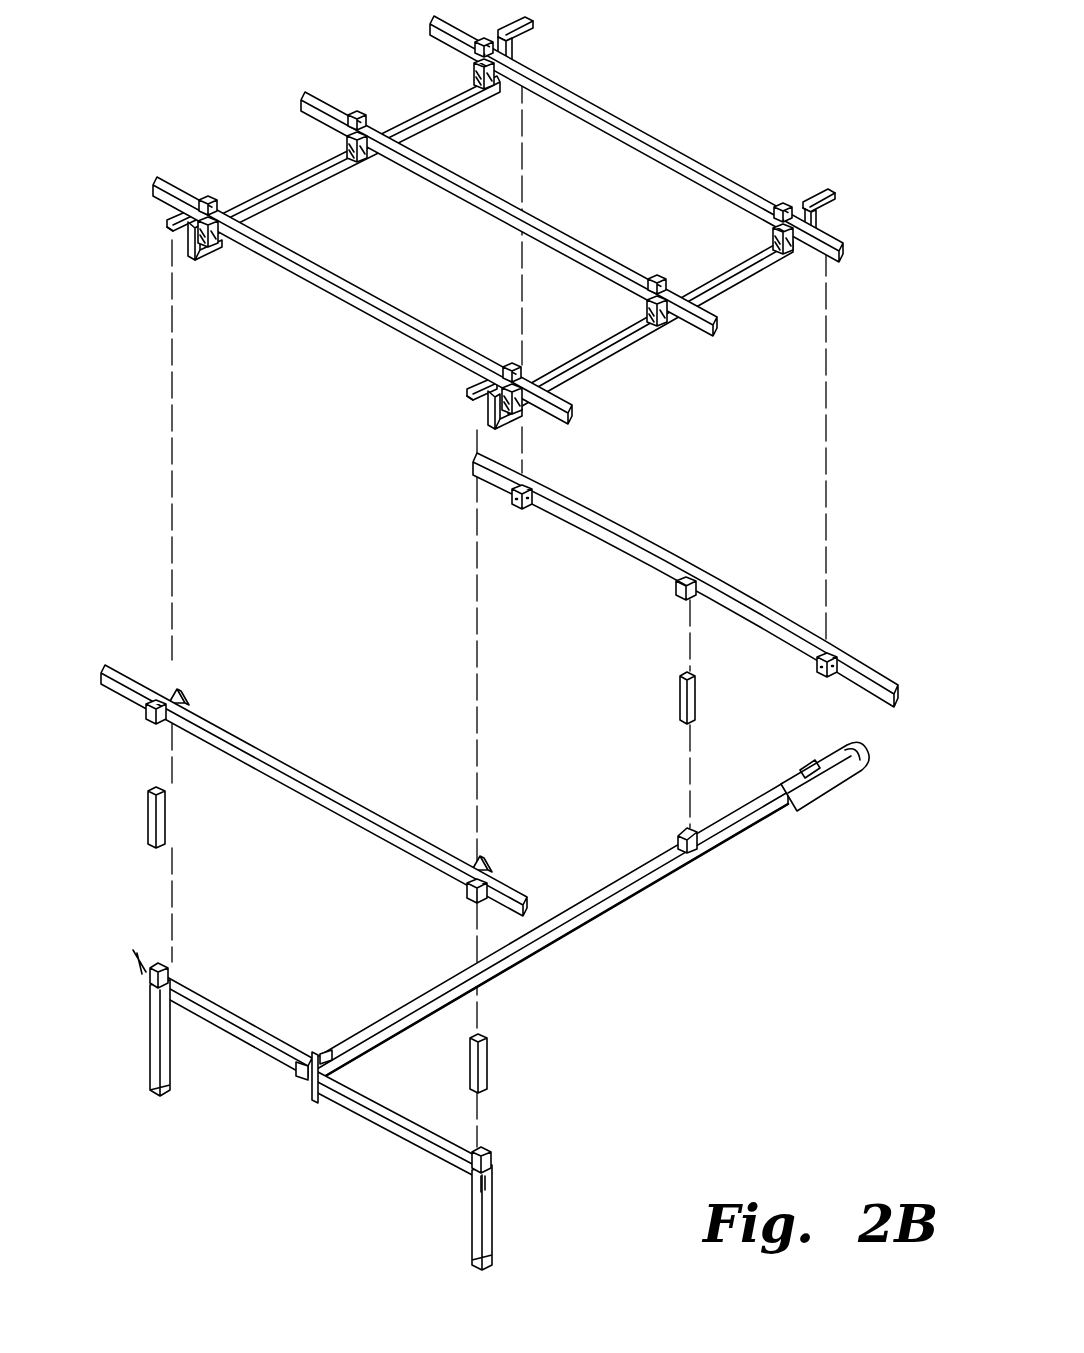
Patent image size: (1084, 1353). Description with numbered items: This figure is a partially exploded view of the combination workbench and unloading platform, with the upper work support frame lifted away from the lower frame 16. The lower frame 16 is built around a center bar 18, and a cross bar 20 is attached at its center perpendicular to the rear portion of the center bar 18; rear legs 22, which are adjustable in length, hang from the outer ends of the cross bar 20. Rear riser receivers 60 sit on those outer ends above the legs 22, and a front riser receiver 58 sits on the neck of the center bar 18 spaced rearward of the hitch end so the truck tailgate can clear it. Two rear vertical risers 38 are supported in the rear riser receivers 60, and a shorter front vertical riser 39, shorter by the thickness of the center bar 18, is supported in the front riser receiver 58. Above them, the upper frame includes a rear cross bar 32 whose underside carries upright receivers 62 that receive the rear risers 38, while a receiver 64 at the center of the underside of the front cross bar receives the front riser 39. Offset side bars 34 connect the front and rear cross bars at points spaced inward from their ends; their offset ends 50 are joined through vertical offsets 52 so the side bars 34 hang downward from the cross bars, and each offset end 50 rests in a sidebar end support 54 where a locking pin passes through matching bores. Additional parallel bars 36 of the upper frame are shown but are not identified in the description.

The lower frame 16 is at (294, 1091).
The center bar 18 is at (630, 877).
The cross bar 20 is at (243, 1020).
The rear legs 22 is at (148, 1042).
The rear cross bar 32 is at (333, 787).
The offset side bars 34 is at (297, 173).
The longitudinal rails 36 is at (657, 140).
The rear vertical risers 38 is at (167, 820).
The front vertical riser 39 is at (680, 693).
The offset ends 50 is at (527, 15).
The sidebar vertical offsets 52 is at (180, 255).
The sidebar end supports 54 is at (527, 507).
The front riser receiver 58 is at (703, 837).
The rear riser receivers 60 is at (177, 973).
The rear cross bar upright receivers 62 is at (147, 707).
The front cross bar receiver 64 is at (670, 590).